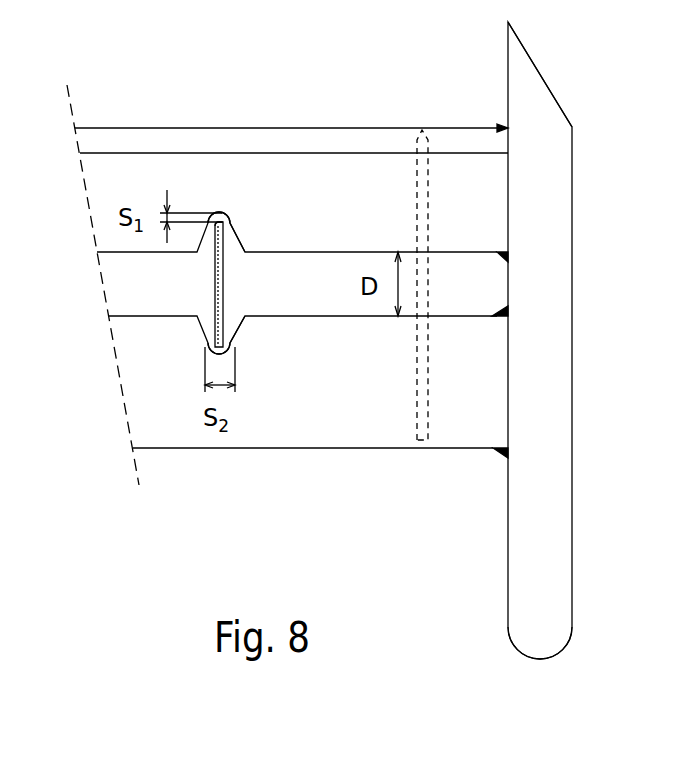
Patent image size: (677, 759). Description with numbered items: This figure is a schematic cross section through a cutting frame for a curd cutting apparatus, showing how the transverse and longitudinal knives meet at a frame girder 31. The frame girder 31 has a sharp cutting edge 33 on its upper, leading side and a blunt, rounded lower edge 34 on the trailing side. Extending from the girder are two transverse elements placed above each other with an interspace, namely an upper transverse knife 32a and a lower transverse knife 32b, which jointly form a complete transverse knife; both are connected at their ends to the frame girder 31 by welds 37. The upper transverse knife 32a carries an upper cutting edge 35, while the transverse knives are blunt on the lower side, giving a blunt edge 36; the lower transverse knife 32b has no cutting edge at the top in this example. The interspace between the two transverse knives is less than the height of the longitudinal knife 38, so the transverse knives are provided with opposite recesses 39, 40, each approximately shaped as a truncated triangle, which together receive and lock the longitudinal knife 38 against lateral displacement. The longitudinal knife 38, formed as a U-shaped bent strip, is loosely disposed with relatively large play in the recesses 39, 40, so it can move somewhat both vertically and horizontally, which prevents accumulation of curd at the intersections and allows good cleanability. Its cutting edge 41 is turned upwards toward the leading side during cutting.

The frame girder 31 is at (550, 338).
The upper transverse knife 32a is at (392, 207).
The lower transverse knife 32b is at (358, 413).
The cutting edge 33 is at (530, 57).
The lower edge 34 is at (545, 650).
The cutting edge 35 is at (325, 127).
The blunt edge 36 is at (382, 448).
The weld 37 is at (500, 126).
The longitudinal knife 38 is at (227, 278).
The recess 39 is at (233, 233).
The recess 40 is at (230, 330).
The cutting edge 41 is at (222, 220).